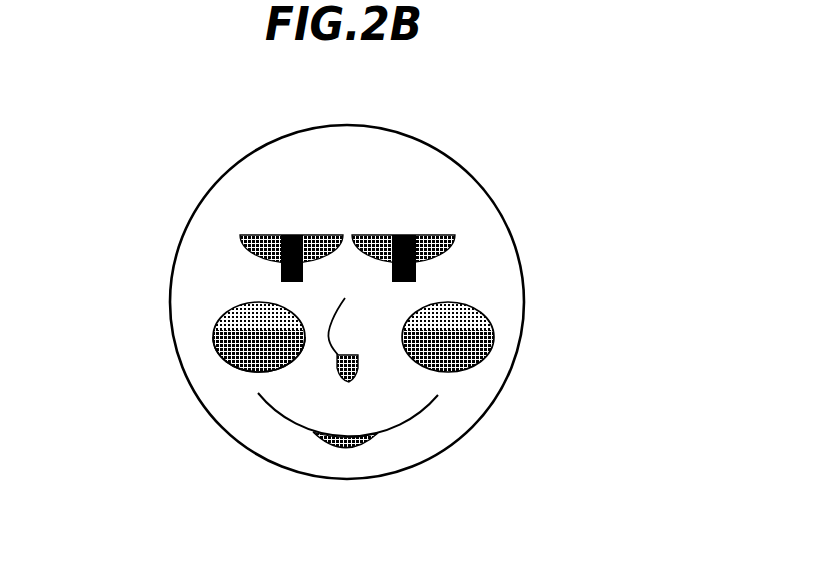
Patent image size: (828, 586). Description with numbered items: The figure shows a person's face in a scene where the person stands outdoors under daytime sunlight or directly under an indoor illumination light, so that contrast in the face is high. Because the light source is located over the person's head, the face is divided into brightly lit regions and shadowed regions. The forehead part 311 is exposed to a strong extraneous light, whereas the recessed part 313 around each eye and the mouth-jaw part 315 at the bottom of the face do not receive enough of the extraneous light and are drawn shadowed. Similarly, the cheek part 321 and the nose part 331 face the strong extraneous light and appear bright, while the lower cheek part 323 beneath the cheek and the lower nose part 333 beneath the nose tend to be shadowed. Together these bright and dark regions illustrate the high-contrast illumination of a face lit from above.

The forehead part 311 is at (344, 196).
The recessed part around an eye 313 is at (432, 236).
The cheek part 321 is at (253, 313).
The lower cheek part 323 is at (243, 358).
The nose part 331 is at (338, 322).
The lower nose part 333 is at (358, 369).
The mouth-jaw part 315 is at (355, 448).